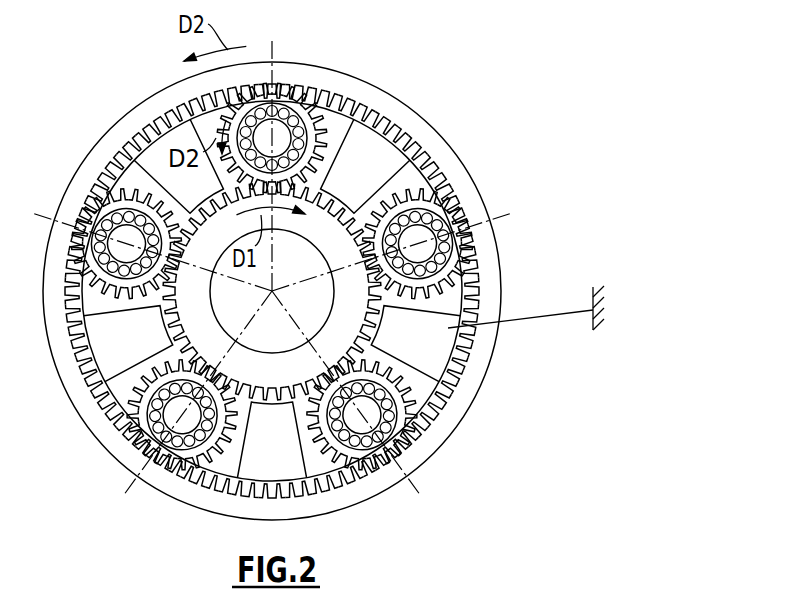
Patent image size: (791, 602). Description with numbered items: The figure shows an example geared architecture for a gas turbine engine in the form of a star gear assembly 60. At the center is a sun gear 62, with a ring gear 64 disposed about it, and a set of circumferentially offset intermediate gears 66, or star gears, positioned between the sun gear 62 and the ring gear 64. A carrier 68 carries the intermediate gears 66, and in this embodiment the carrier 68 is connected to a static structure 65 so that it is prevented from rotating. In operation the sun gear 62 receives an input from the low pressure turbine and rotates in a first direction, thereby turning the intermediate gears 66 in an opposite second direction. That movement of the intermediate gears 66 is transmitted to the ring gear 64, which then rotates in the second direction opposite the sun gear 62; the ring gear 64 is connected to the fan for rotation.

The star gear assembly 60 is at (500, 36).
The sun gear 62 is at (177, 312).
The ring gear 64 is at (167, 88).
The static structure 65 is at (591, 324).
The intermediate gears 66 is at (308, 100).
The carrier 68 is at (386, 164).